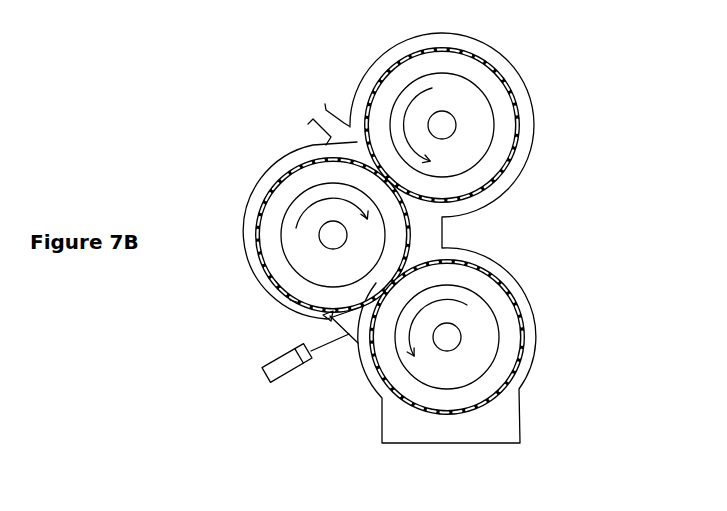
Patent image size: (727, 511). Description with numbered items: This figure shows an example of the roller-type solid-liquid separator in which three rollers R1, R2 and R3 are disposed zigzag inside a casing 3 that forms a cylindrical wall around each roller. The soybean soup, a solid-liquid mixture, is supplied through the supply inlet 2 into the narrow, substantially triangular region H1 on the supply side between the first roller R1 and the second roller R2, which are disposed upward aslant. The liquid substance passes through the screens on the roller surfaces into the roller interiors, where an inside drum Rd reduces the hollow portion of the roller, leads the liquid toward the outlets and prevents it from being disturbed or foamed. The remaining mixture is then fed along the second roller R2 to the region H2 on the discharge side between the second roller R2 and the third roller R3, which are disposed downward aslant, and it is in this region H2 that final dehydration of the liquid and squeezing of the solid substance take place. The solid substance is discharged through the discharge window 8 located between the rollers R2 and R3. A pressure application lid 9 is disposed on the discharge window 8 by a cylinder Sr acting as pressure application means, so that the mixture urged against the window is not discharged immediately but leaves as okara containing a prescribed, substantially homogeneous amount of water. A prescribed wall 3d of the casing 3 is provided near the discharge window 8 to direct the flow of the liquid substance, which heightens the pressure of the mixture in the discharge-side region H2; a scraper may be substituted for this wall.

The casing 3 is at (382, 60).
The supply inlet 2 is at (323, 108).
The prescribed region on the supply side H1 is at (355, 142).
The first roller R1 is at (488, 106).
The inside drum Rd is at (485, 92).
The second roller R2 is at (260, 207).
The third roller R3 is at (497, 279).
The prescribed wall 3d is at (290, 300).
The pressure application lid 9 is at (340, 319).
The discharge window 8 is at (358, 343).
The cylinder Sr is at (262, 370).
The prescribed region on the discharge side H2 is at (365, 388).